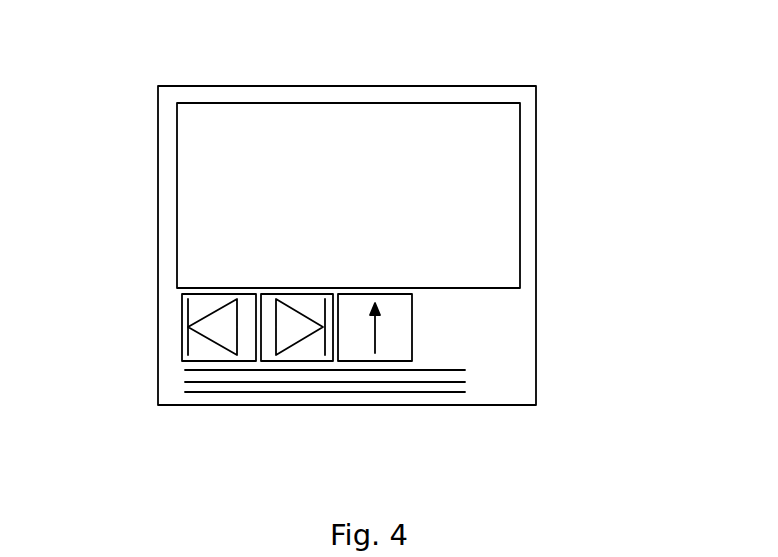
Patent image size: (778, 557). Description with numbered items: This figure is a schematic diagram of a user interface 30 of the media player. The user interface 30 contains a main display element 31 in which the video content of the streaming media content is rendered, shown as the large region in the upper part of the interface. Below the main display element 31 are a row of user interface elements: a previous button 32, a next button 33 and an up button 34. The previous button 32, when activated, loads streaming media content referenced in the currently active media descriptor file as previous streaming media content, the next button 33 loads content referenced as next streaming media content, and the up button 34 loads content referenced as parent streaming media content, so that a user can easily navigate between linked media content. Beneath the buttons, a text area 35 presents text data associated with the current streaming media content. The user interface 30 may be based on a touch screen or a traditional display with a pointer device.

The user interface 30 is at (622, 79).
The main display element 31 is at (497, 208).
The previous button 32 is at (188, 327).
The next button 33 is at (296, 294).
The up button 34 is at (377, 294).
The text area 35 is at (265, 382).